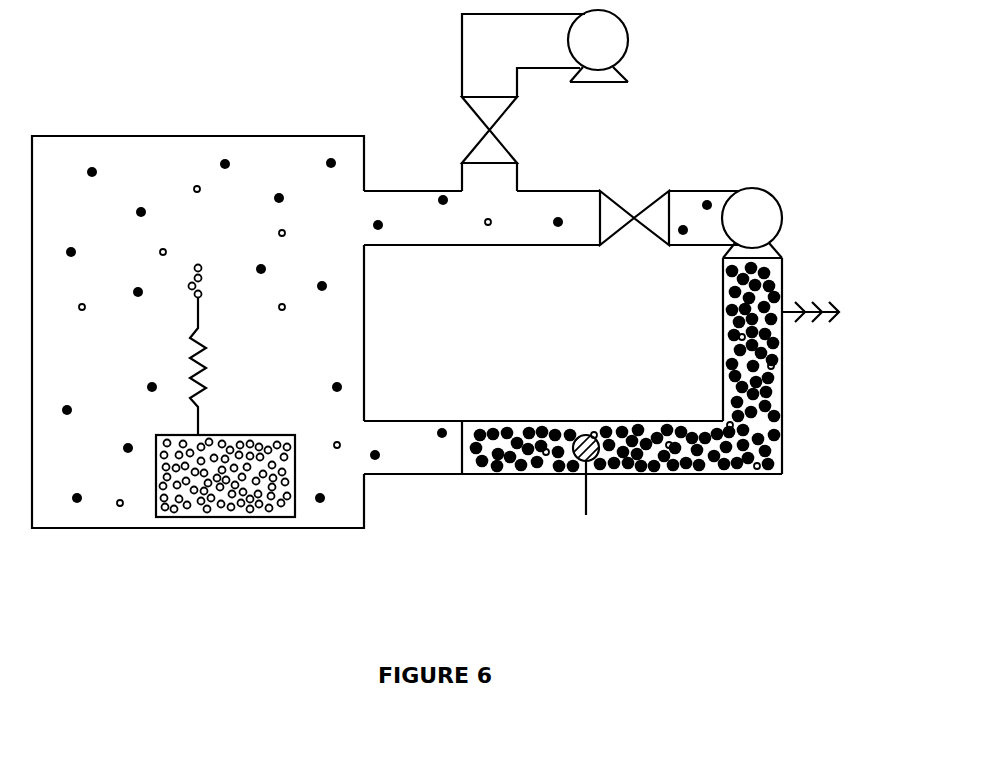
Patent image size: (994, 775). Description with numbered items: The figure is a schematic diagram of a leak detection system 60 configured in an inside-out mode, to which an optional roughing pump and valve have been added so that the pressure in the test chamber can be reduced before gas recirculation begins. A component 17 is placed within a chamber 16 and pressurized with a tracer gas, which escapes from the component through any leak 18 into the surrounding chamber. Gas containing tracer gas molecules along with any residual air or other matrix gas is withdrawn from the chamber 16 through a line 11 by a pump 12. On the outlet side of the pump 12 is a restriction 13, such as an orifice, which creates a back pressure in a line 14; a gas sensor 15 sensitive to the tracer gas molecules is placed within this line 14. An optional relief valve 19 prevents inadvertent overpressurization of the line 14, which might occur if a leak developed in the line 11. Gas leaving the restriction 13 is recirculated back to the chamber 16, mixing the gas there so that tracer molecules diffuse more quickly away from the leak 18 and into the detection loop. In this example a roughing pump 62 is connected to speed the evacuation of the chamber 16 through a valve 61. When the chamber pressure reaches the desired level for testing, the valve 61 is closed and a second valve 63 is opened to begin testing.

The leak detection system 60 is at (155, 108).
The chamber 16 is at (320, 122).
The line 11 is at (417, 177).
The valve 61 is at (502, 118).
The roughing pump 62 is at (642, 50).
The valve 63 is at (666, 204).
The pump 12 is at (779, 174).
The restriction 13 is at (474, 407).
The line 14 is at (765, 488).
The gas sensor 15 is at (600, 512).
The component 17 is at (279, 421).
The leak 18 is at (183, 367).
The relief valve 19 is at (839, 340).